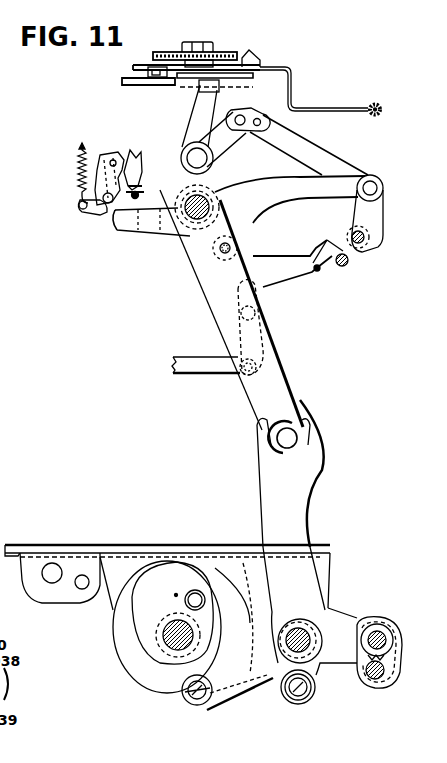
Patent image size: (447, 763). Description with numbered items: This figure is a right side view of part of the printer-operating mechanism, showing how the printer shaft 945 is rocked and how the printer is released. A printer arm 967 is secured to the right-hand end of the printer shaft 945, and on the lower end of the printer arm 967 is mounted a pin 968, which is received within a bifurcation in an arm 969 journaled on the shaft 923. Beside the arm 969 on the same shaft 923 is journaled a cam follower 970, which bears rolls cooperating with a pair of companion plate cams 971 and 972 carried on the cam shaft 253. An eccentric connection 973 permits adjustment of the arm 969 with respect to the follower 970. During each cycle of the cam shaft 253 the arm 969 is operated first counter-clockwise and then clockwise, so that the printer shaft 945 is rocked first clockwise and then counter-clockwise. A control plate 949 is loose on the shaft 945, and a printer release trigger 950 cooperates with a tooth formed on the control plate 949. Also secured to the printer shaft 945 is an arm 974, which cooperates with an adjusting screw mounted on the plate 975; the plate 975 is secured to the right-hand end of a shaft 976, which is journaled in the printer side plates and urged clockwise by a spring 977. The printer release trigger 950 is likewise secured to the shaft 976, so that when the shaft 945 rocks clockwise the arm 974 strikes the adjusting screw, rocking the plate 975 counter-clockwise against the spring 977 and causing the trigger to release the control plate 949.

The printer shaft 945 is at (212, 195).
The control plate 949 is at (130, 150).
The printer release trigger 950 is at (95, 172).
The plate 975 is at (108, 172).
The spring 977 is at (80, 184).
The shaft 976 is at (108, 211).
The arm 974 is at (143, 227).
The printer arm 967 is at (215, 308).
The pin 968 is at (290, 430).
The arm 969 is at (262, 480).
The plate cam 971 is at (115, 612).
The plate cam 972 is at (150, 630).
The cam shaft 253 is at (167, 645).
The shaft 923 is at (297, 627).
The eccentric connection 973 is at (375, 627).
The cam follower 970 is at (247, 690).